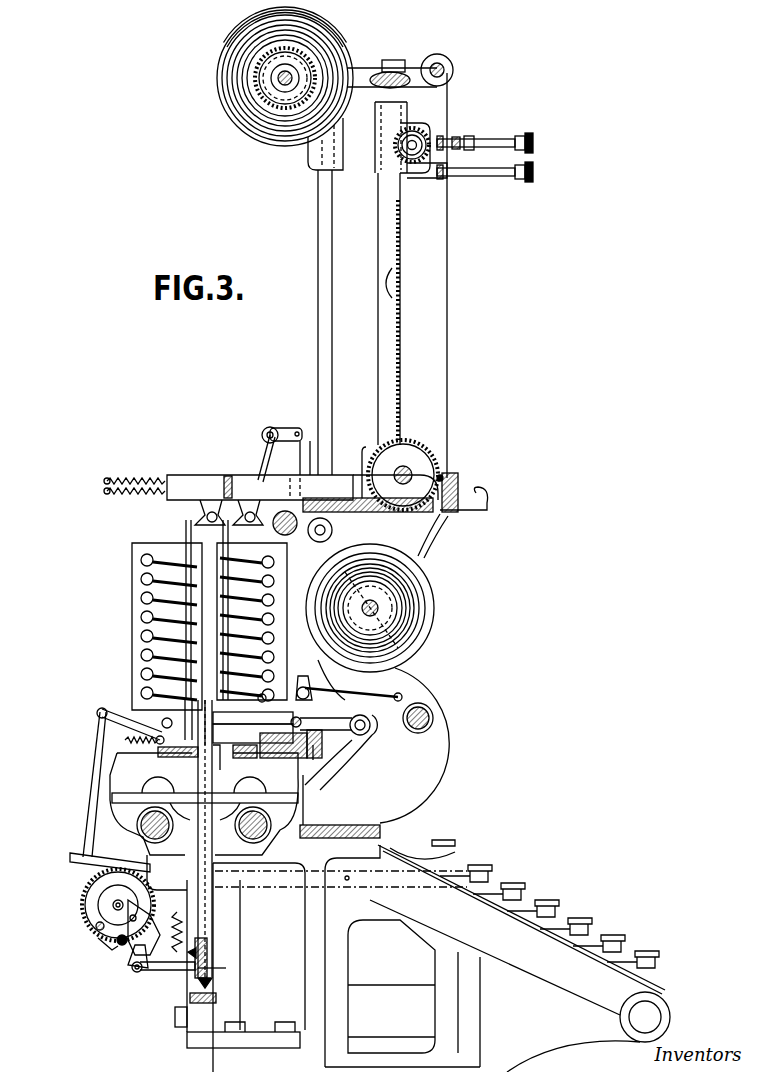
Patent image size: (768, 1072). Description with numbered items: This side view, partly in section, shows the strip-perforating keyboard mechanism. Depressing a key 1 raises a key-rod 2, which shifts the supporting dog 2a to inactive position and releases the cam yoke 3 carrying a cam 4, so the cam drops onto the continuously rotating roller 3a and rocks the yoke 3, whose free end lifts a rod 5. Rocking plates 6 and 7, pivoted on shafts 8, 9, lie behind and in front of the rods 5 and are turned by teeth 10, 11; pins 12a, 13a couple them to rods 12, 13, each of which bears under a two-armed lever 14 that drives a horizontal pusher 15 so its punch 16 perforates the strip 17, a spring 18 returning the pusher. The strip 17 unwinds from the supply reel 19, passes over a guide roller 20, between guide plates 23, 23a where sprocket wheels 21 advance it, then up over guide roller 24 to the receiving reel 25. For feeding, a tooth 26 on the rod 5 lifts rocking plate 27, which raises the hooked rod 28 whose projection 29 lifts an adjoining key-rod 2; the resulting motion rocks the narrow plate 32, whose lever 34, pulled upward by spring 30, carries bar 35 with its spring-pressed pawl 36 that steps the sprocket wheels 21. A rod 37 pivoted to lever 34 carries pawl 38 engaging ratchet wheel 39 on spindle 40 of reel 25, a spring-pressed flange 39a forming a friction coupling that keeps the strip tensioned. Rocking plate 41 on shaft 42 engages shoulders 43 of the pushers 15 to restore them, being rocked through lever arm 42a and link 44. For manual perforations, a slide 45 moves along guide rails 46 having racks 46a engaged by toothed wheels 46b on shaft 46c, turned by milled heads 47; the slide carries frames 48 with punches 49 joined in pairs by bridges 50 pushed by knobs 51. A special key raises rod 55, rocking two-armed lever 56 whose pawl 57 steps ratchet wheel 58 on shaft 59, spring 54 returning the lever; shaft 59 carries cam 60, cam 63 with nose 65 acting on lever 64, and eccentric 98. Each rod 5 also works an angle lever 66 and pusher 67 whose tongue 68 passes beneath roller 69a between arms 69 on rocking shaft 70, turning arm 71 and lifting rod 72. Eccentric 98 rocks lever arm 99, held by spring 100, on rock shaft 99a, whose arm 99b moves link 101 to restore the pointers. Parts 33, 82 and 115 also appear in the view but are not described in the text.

The key 1 is at (490, 868).
The key-rod 2 is at (200, 921).
The supporting dog 2a is at (145, 803).
The cam yoke 3 is at (132, 794).
The roller 3a is at (140, 832).
The cam 4 is at (160, 780).
The rod 5 is at (229, 652).
The rocking plate 6 is at (148, 641).
The rocking plate 7 is at (232, 601).
The shaft 8 is at (141, 561).
The shaft 9 is at (273, 586).
The teeth 10 is at (190, 626).
The tooth 11 is at (232, 629).
The rod 12 is at (185, 553).
The projecting pin 12a is at (145, 606).
The rod 13 is at (229, 553).
The projecting pin 13a is at (229, 578).
The two-armed lever 14 is at (205, 514).
The pusher 15 is at (222, 480).
The punch 16 is at (452, 470).
The strip 17 is at (448, 358).
The spring 18 is at (134, 481).
The supply reel 19 is at (415, 618).
The guide roller 20 is at (333, 532).
The sprocket wheels 21 is at (408, 442).
The plate 23 is at (470, 486).
The plate 23a is at (442, 476).
The guide roller 24 is at (452, 66).
The receiving reel 25 is at (428, 58).
The tooth 26 is at (211, 704).
The rocking plate 27 is at (253, 710).
The rod 28 is at (192, 700).
The lateral projection 29 is at (198, 985).
The spring 30 is at (350, 662).
The rocking plate 32 is at (222, 682).
The pivot 33 is at (269, 705).
The lever 34 is at (309, 695).
The bar 35 is at (330, 690).
The pawl 36 is at (440, 522).
The rod 37 is at (333, 352).
The pawl 38 is at (298, 92).
The ratchet wheel 39 is at (262, 105).
The spring-pressed flange 39a is at (226, 44).
The spindle 40 is at (278, 82).
The rocking plate 41 is at (262, 458).
The shaft 42 is at (270, 427).
The lever arm 42a is at (292, 429).
The shoulders 43 is at (248, 478).
The link 44 is at (312, 462).
The slide 45 is at (415, 179).
The guide rails 46 is at (378, 282).
The toothed racks 46a is at (397, 292).
The toothed wheels 46b is at (404, 162).
The shaft 46c is at (408, 148).
The milled heads 47 is at (415, 130).
The frame 48 is at (442, 139).
The punches 49 is at (462, 141).
The bridge 50 is at (476, 140).
The knob 51 is at (530, 142).
The spring 54 is at (125, 736).
The rod 55 is at (197, 750).
The two-armed lever 56 is at (105, 710).
The pawl 57 is at (92, 790).
The ratchet wheel 58 is at (85, 893).
The shaft 59 is at (98, 905).
The cam 60 is at (97, 938).
The cam 63 is at (95, 922).
The lever 64 is at (138, 966).
The nose 65 is at (118, 942).
The angle lever 66 is at (221, 752).
The pusher 67 is at (210, 737).
The tongue 68 is at (267, 741).
The arms 69 is at (326, 717).
The roller 69a is at (335, 770).
The rocking shaft 70 is at (366, 737).
The arm 71 is at (312, 760).
The rod 72 is at (299, 715).
The stop 82 is at (444, 840).
The eccentric 98 is at (118, 900).
The lever arm 99 is at (140, 908).
The rock shaft 99a is at (143, 968).
The arm 99b is at (212, 962).
The spring 100 is at (183, 925).
The link 101 is at (210, 945).
The pin 115 is at (112, 917).